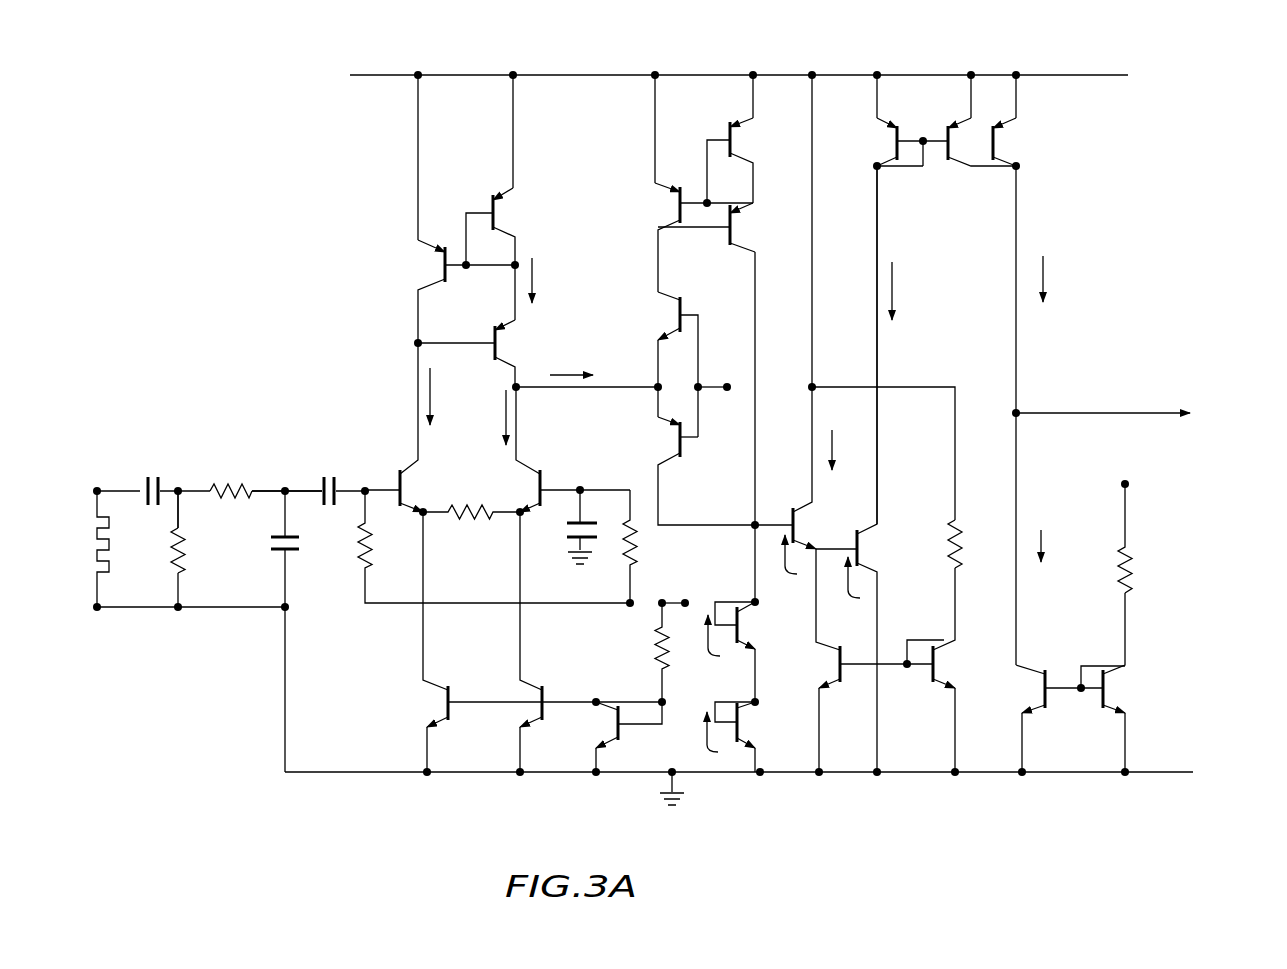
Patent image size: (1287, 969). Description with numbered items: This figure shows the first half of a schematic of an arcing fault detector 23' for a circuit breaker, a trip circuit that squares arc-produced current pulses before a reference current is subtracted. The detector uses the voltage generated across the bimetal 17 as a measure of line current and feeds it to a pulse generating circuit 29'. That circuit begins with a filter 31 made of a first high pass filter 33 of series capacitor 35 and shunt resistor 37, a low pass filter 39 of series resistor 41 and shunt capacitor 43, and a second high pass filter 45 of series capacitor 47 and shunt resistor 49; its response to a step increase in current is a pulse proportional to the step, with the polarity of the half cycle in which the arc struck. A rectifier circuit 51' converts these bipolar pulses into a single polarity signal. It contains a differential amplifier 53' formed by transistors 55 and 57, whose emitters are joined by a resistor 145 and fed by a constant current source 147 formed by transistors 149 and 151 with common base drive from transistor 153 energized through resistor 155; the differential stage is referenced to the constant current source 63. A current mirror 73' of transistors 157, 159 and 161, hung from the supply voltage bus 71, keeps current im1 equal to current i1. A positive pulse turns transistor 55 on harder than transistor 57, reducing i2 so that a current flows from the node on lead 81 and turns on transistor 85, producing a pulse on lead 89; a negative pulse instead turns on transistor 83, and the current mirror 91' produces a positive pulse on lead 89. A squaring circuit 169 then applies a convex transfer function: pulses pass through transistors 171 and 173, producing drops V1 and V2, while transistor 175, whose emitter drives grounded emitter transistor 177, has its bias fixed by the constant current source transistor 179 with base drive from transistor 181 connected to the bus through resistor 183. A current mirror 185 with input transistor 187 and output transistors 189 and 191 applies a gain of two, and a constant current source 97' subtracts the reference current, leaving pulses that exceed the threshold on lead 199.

The bimetal 17 is at (90, 560).
The arcing fault detector 23' is at (769, 424).
The pulse generating circuit 29' is at (206, 511).
The filter 31 is at (246, 489).
The first high pass filter 33 is at (158, 529).
The series capacitor 35 is at (152, 477).
The shunt resistor 37 is at (180, 553).
The low pass filter 39 is at (265, 510).
The series resistor 41 is at (250, 486).
The shunt capacitor 43 is at (275, 548).
The second high pass filter 45 is at (325, 538).
The series capacitor 47 is at (332, 476).
The shunt resistor 49 is at (375, 537).
The rectifier circuit 51' is at (791, 447).
The differential amplifier 53' is at (525, 576).
The transistor 55 is at (398, 470).
The transistor 57 is at (543, 470).
The constant current source 63 is at (674, 716).
The supply voltage bus 71 is at (563, 74).
The current mirror 73' is at (499, 233).
The lead 81 is at (640, 385).
The transistor 83 is at (683, 300).
The transistor 85 is at (682, 455).
The lead 89 is at (757, 474).
The current mirror 91' is at (705, 183).
The constant current source 97' is at (1116, 626).
The resistor 145 is at (478, 518).
The constant current source 147 is at (562, 666).
The transistor 149 is at (450, 686).
The transistor 151 is at (545, 690).
The transistor 153 is at (603, 727).
The resistor 155 is at (655, 660).
The transistor 157 is at (442, 247).
The transistor 159 is at (492, 198).
The transistor 161 is at (492, 331).
The circuit 169 is at (906, 413).
The transistor 171 is at (742, 722).
The transistor 173 is at (740, 627).
The transistor 175 is at (797, 513).
The grounded emitter transistor 177 is at (862, 540).
The transistor 179 is at (828, 684).
The transistor 181 is at (930, 672).
The resistor 183 is at (960, 540).
The current mirror 185 is at (925, 183).
The input transistor 187 is at (893, 141).
The output transistor 189 is at (948, 130).
The output transistor 191 is at (1000, 138).
The lead 199 is at (1102, 415).